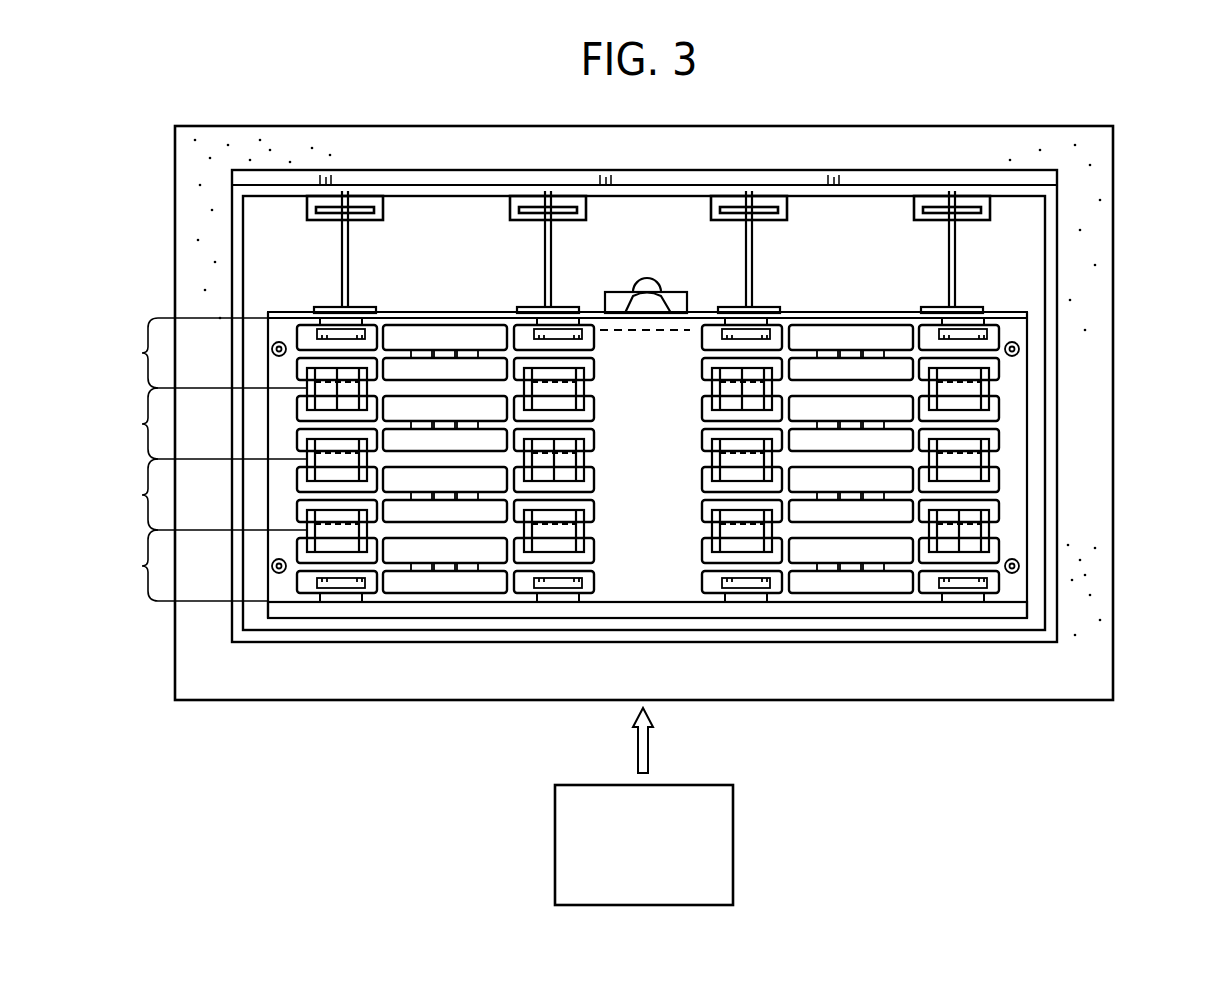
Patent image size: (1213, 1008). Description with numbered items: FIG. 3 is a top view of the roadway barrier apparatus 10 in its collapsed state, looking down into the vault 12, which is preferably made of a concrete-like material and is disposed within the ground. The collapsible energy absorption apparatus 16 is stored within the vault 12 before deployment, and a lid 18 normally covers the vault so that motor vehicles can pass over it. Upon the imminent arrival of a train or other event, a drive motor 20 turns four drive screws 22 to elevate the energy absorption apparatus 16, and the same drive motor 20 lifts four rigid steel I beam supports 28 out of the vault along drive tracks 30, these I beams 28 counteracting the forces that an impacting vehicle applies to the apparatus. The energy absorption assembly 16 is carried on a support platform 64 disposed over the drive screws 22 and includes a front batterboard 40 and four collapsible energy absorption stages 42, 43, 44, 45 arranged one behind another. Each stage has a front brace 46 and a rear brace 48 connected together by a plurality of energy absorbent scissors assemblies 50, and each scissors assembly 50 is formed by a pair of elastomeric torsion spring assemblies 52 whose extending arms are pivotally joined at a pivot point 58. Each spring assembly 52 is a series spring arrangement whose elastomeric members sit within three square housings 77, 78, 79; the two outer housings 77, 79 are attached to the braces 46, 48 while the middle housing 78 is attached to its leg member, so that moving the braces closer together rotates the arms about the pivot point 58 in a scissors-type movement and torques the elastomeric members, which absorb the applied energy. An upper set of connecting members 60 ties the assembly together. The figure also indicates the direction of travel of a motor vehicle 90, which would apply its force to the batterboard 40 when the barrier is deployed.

The roadway barrier apparatus 10 is at (315, 718).
The vault 12 is at (862, 686).
The collapsible energy absorption apparatus 16 is at (1028, 440).
The lid 18 is at (888, 190).
The drive motor 20 is at (650, 286).
The drive screws 22 is at (272, 573).
The I beam supports 28 is at (955, 252).
The drive tracks 30 is at (967, 203).
The front batterboard 40 is at (908, 607).
The collapsible energy absorption stage 42 is at (187, 565).
The collapsible energy absorption stage 43 is at (206, 494).
The collapsible energy absorption stage 44 is at (206, 423).
The collapsible energy absorption stage 45 is at (206, 353).
The front brace 46 is at (352, 603).
The rear brace 48 is at (335, 320).
The energy absorbent scissors assembly 50 is at (297, 455).
The elastomeric torsion spring assembly 52 is at (287, 333).
The pivot point 58 is at (442, 568).
The upper set of connecting members 60 is at (335, 594).
The support platform 64 is at (1018, 497).
The square housing 77 is at (985, 590).
The square housing 78 is at (833, 580).
The square housing 79 is at (700, 593).
The motor vehicle 90 is at (733, 845).